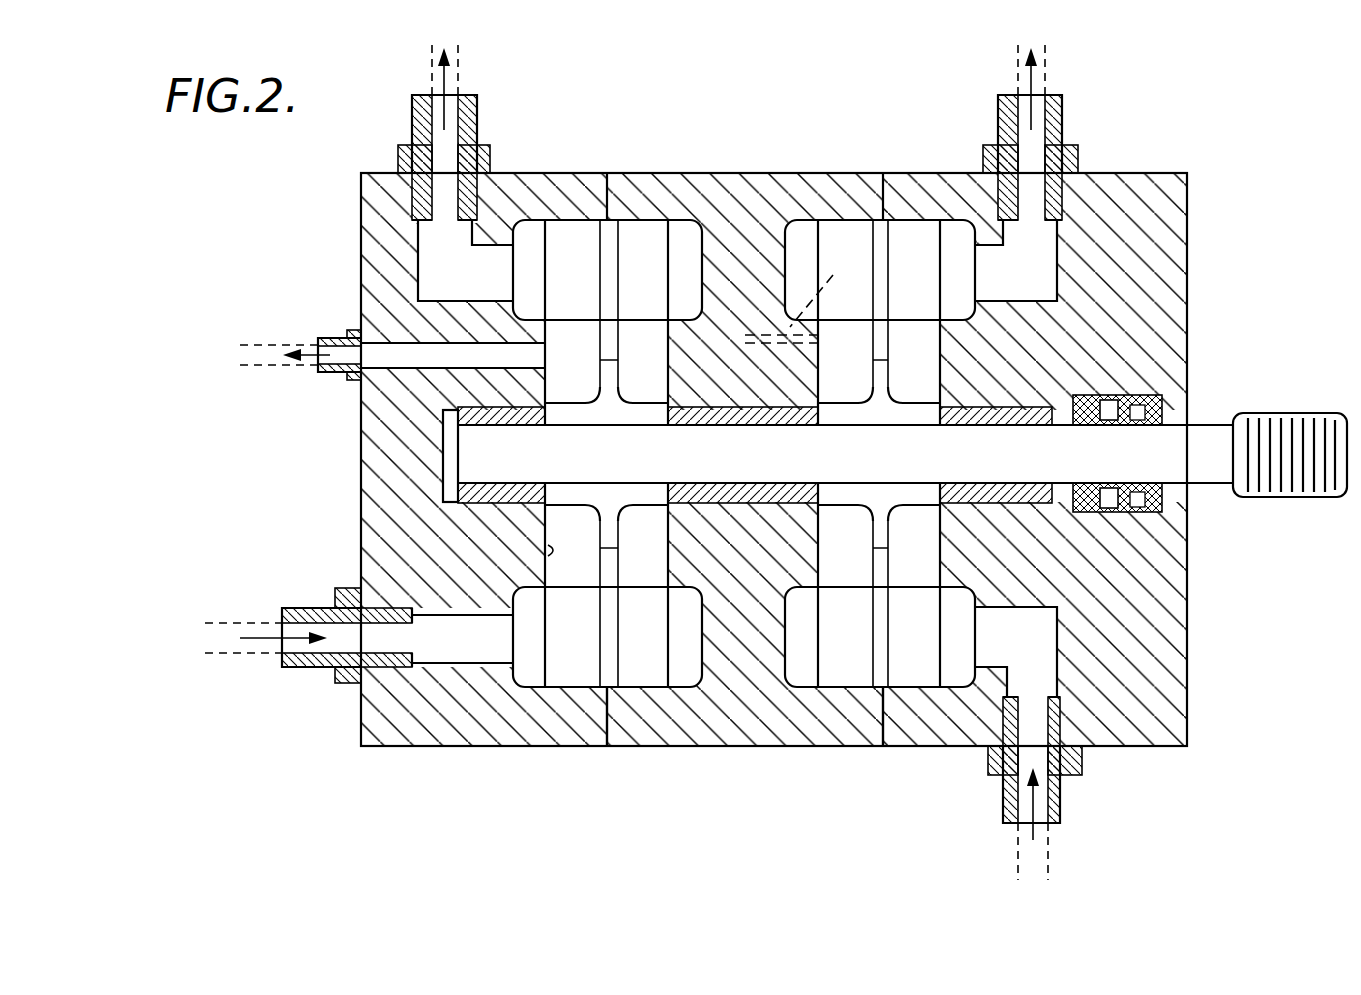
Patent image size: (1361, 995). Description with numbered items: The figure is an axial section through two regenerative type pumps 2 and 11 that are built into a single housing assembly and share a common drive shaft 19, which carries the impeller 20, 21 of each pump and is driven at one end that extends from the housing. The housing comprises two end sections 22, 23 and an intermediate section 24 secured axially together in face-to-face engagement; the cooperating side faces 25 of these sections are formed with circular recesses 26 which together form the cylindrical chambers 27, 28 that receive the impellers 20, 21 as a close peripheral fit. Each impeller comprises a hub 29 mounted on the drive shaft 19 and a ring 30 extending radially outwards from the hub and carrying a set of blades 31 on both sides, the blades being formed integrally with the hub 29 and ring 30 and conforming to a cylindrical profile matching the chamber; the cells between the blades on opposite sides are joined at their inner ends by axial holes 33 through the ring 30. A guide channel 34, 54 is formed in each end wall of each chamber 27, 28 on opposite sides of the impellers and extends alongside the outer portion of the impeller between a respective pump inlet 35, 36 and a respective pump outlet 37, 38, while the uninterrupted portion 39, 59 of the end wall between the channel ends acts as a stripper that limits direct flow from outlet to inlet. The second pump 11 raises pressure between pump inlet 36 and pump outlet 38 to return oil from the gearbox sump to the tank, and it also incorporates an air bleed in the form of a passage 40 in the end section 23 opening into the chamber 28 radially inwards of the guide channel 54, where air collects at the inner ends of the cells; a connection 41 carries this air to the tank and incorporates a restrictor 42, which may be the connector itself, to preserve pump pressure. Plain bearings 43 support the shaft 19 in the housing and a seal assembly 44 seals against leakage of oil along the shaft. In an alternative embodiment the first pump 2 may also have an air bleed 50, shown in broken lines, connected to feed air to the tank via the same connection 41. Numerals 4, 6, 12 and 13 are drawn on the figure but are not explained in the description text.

The first regenerative pump 2 is at (930, 748).
The outlet flow 4 is at (1048, 866).
The outlet flow 6 is at (1045, 72).
The second regenerative pump 11 is at (432, 749).
The inlet flow 12 is at (228, 655).
The outlet flow 13 is at (430, 58).
The drive shaft 19 is at (1297, 415).
The impeller 20 is at (860, 680).
The impeller 21 is at (623, 453).
The end section 22 is at (1175, 598).
The end section 23 is at (378, 462).
The intermediate section 24 is at (736, 738).
The cooperating side faces 25 is at (607, 735).
The circular recesses 26 is at (560, 388).
The cylindrical chamber 27 is at (840, 228).
The cylindrical chamber 28 is at (580, 238).
The hub 29 is at (570, 502).
The ring 30 is at (615, 660).
The blades 31 is at (590, 620).
The axial holes 33 is at (612, 520).
The guide channel 34 is at (797, 256).
The pump inlet 35 is at (1048, 786).
The pump inlet 36 is at (325, 655).
The pump outlet 37 is at (1042, 120).
The pump outlet 38 is at (412, 117).
The uninterrupted portion 39 is at (935, 520).
The air bleed passage 40 is at (412, 350).
The connection 41 is at (252, 352).
The restrictor 42 is at (338, 372).
The plain bearings 43 is at (1010, 408).
The seal assembly 44 is at (1152, 398).
The air bleed 50 is at (803, 294).
The guide channel 54 is at (528, 232).
The uninterrupted portion 59 is at (548, 550).